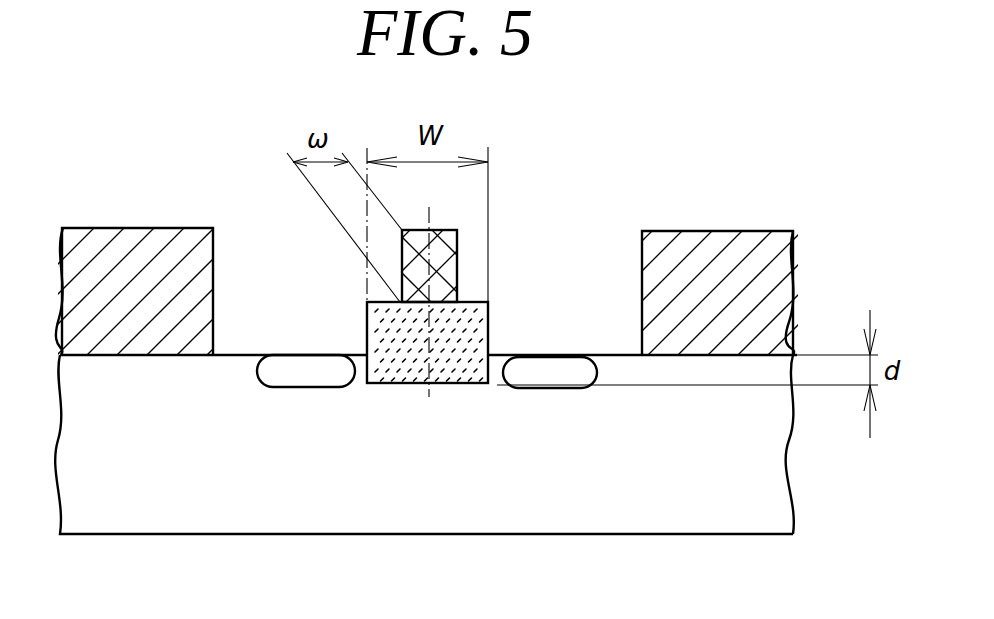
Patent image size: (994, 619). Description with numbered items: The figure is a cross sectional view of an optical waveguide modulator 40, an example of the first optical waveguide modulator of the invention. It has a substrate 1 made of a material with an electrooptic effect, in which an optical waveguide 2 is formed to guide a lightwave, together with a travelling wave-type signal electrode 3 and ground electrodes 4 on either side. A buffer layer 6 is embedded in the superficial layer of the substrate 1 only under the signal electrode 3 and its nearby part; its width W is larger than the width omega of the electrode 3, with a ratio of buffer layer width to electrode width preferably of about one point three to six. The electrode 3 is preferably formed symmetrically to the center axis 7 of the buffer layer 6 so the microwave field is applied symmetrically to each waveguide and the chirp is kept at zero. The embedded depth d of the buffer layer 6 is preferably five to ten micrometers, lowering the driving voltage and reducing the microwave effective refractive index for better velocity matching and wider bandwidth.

The substrate 1 is at (750, 453).
The optical waveguide 2 is at (320, 372).
The travelling wave-type signal electrode 3 is at (450, 268).
The ground electrodes 4 is at (141, 253).
The buffer layer 6 is at (475, 327).
The center axis 7 is at (430, 217).
The optical waveguide modulator 40 is at (782, 203).